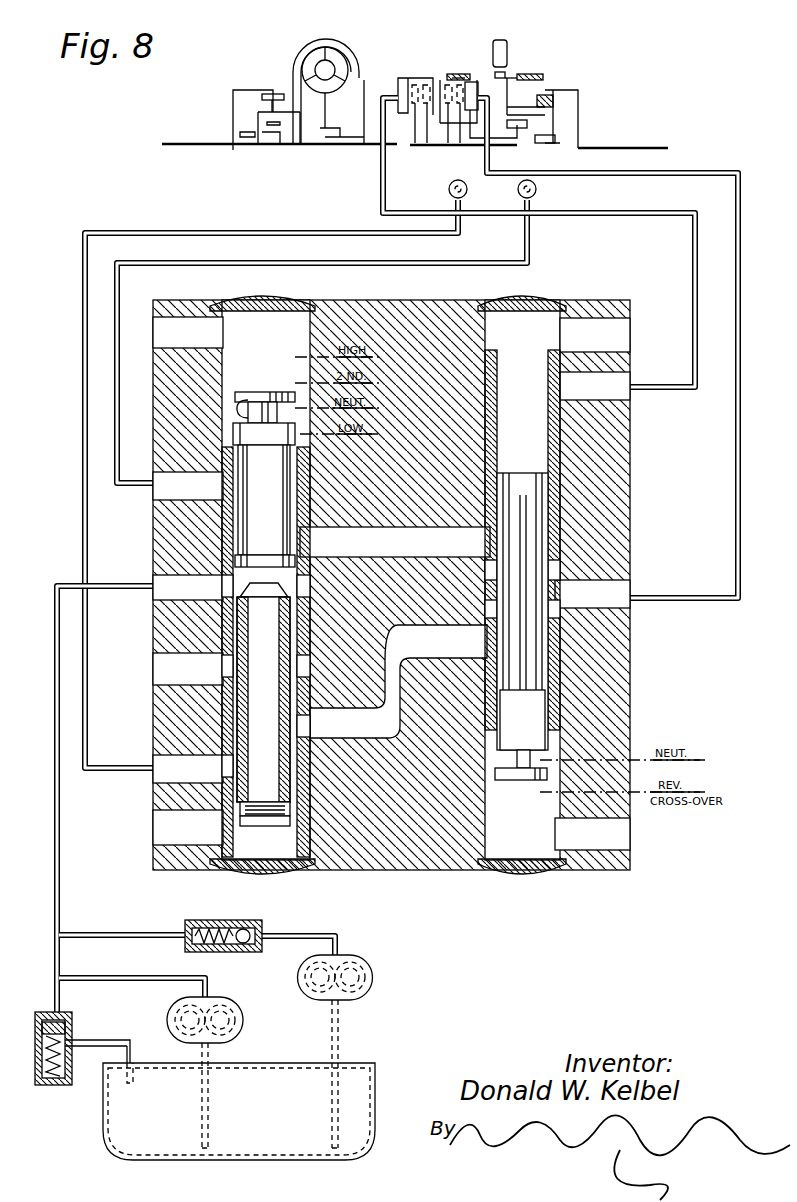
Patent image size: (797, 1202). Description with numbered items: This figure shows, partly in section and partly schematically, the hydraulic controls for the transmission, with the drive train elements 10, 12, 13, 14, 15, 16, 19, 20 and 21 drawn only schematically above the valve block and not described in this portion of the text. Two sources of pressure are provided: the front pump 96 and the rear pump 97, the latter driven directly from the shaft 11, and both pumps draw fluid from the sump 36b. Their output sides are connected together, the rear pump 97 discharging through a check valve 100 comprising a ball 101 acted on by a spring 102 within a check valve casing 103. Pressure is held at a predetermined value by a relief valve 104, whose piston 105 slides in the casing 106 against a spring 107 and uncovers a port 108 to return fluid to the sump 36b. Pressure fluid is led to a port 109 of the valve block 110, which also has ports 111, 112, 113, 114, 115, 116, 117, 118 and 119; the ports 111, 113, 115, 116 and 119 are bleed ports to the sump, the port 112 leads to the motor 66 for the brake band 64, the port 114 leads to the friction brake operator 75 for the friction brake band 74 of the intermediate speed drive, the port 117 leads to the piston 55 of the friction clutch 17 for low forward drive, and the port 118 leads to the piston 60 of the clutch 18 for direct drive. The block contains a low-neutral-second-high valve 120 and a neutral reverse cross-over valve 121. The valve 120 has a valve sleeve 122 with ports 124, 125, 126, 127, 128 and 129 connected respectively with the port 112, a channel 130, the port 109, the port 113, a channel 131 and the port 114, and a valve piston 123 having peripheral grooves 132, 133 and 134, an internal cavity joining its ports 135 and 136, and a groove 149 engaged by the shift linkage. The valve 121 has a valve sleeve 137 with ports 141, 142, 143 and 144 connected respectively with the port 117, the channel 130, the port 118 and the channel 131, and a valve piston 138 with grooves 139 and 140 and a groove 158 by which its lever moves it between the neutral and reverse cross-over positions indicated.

The engine 10 is at (170, 143).
The shaft 11 is at (652, 147).
The intermediate shaft 12 is at (318, 146).
The intermediate shaft 13 is at (438, 150).
The torque converter 14 is at (299, 39).
The clutch 15 is at (244, 110).
The planetary gear set 16 is at (561, 110).
The friction clutch 17 is at (418, 72).
The clutch 18 is at (472, 90).
The clutch 19 is at (458, 72).
The brake servo 20 is at (523, 72).
The piston 21 is at (512, 71).
The sump 36b is at (357, 1065).
The piston 55 is at (406, 79).
The piston 60 is at (468, 120).
The brake band 64 is at (545, 74).
The motor 66 is at (540, 190).
The friction brake band 74 is at (449, 73).
The friction brake operator 75 is at (447, 190).
The front pump 96 is at (245, 1036).
The rear pump 97 is at (372, 958).
The check valve 100 is at (263, 920).
The ball 101 is at (240, 950).
The spring 102 is at (224, 928).
The check valve casing 103 is at (186, 920).
The relief valve 104 is at (60, 1090).
The piston 105 is at (70, 1025).
The casing 106 is at (40, 1014).
The spring 107 is at (52, 1080).
The port 108 is at (126, 1040).
The port 109 is at (150, 602).
The valve block 110 is at (150, 548).
The port 111 is at (157, 326).
The port 112 is at (158, 506).
The port 113 is at (150, 684).
The port 114 is at (150, 788).
The port 115 is at (152, 846).
The port 116 is at (625, 333).
The port 117 is at (625, 398).
The port 118 is at (625, 603).
The port 119 is at (625, 842).
The low-neutral-second-high valve 120 is at (306, 296).
The neutral reverse cross-over valve 121 is at (558, 297).
The valve sleeve 122 is at (310, 462).
The valve piston 123 is at (282, 392).
The port 124 is at (225, 481).
The port 125 is at (236, 560).
The port 126 is at (244, 588).
The port 127 is at (222, 680).
The port 128 is at (305, 727).
The port 129 is at (225, 760).
The channel 130 is at (392, 549).
The channel 131 is at (430, 651).
The groove 132 is at (290, 493).
The groove 133 is at (312, 590).
The groove 134 is at (305, 662).
The port 135 is at (222, 605).
The port 136 is at (292, 786).
The valve sleeve 137 is at (488, 354).
The valve piston 138 is at (504, 476).
The groove 139 is at (528, 496).
The groove 140 is at (526, 664).
The port 141 is at (488, 504).
The port 142 is at (486, 550).
The port 143 is at (490, 589).
The port 144 is at (560, 630).
The groove 149 is at (248, 395).
The groove 158 is at (526, 782).